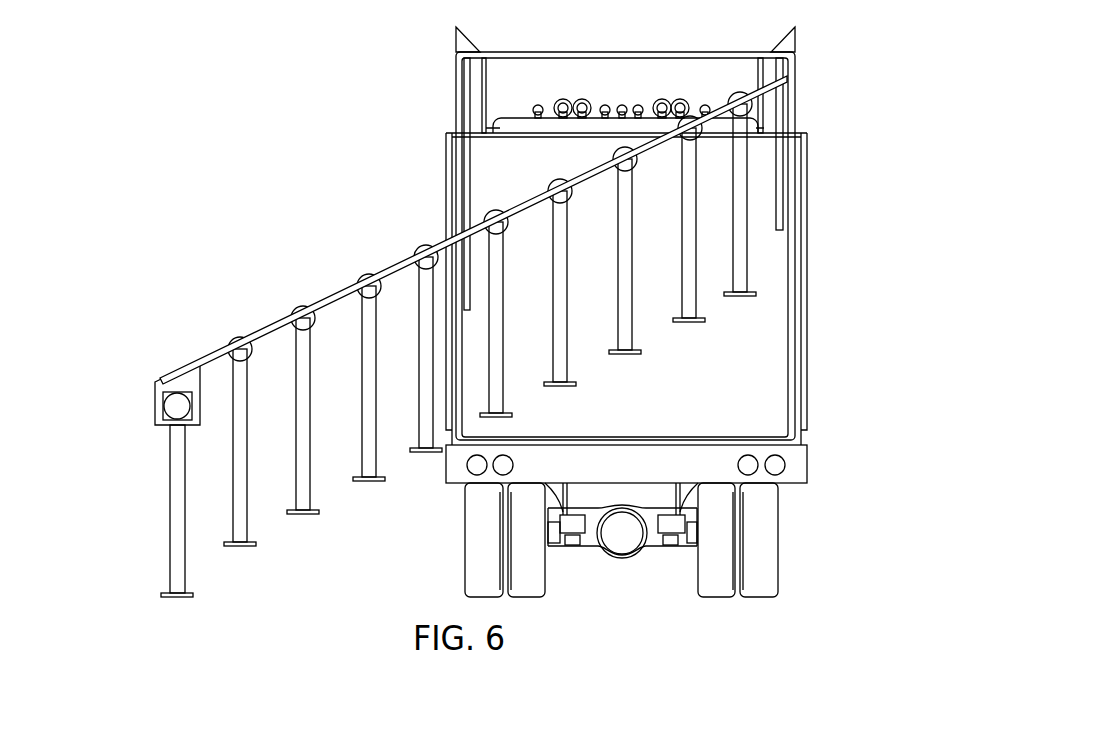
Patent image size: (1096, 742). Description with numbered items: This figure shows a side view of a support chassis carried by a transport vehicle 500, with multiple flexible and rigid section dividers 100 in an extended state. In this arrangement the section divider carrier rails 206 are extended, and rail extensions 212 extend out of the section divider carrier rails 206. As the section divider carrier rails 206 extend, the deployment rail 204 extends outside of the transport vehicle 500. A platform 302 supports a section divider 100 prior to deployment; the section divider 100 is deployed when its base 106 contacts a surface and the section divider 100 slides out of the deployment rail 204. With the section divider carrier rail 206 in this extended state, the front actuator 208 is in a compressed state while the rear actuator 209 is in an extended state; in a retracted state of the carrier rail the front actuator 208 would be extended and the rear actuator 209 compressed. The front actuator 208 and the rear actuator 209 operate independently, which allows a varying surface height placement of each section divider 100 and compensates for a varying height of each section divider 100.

The transport vehicle 500 is at (230, 142).
The section divider 100 is at (302, 478).
The base 106 is at (195, 594).
The deployment rail 204 is at (155, 400).
The section divider carrier rail 206 is at (210, 360).
The front actuator 208 is at (468, 245).
The rear actuator 209 is at (782, 193).
The rail extension 212 is at (340, 293).
The platform 302 is at (160, 428).